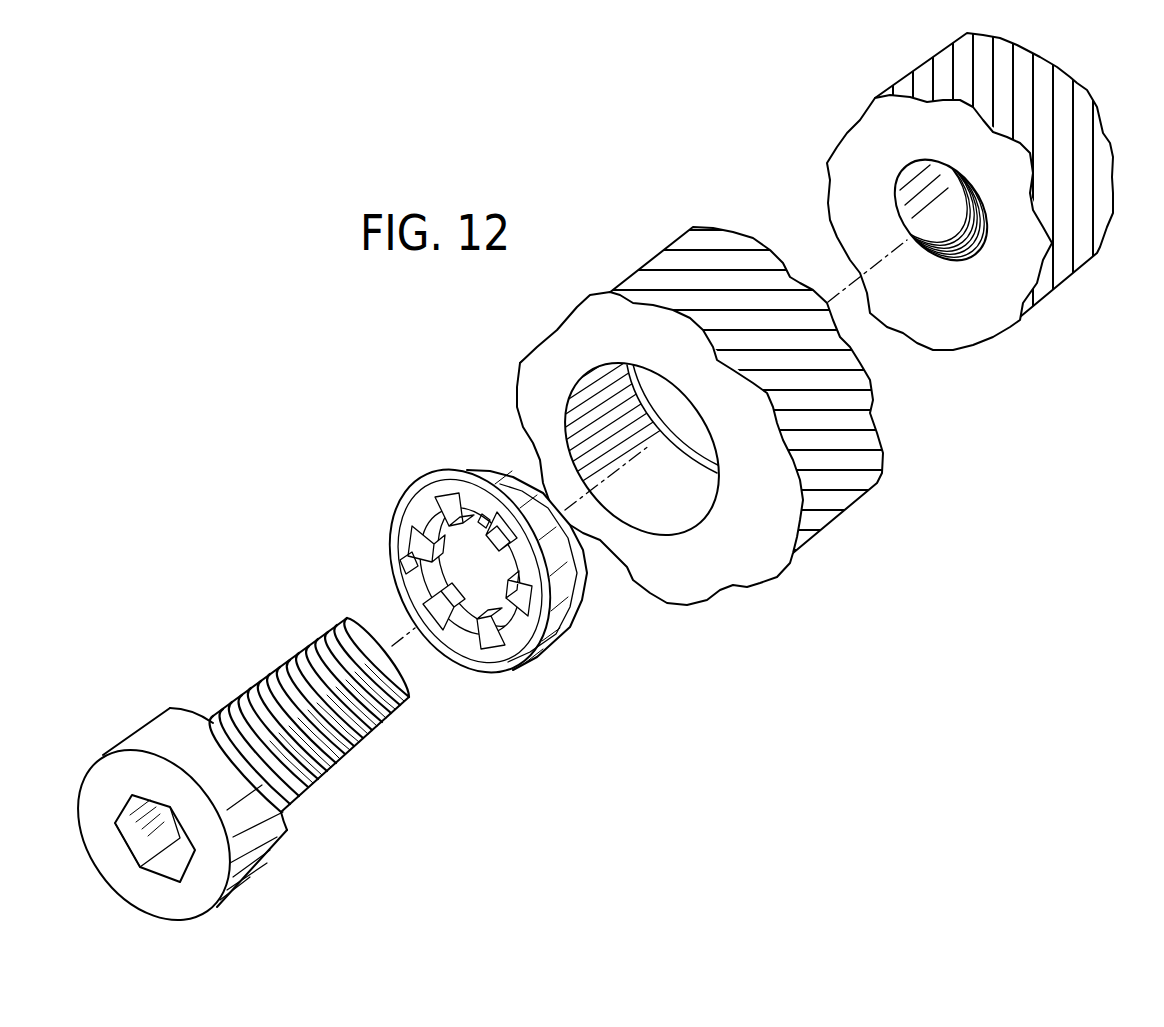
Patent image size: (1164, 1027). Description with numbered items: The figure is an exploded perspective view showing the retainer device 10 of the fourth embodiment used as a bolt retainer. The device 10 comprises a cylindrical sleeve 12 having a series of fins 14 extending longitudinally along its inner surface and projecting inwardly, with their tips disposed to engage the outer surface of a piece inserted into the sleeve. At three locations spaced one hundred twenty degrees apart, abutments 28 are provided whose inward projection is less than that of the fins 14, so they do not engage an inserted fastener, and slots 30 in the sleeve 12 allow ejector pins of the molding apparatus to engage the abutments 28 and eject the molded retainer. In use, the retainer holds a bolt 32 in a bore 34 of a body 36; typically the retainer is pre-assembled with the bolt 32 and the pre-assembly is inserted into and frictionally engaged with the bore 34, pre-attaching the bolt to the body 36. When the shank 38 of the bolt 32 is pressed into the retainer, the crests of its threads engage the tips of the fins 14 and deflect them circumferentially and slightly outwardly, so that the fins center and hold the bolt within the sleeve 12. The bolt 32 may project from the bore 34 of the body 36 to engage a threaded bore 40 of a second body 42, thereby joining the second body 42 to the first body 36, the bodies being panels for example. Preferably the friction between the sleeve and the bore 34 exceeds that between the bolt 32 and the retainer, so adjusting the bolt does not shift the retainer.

The device 10 is at (467, 572).
The cylindrical sleeve 12 is at (432, 478).
The fins 14 is at (412, 532).
The abutments 28 is at (483, 526).
The slots 30 is at (398, 583).
The bolt 32 is at (234, 783).
The bore 34 is at (680, 520).
The body 36 is at (700, 442).
The shank 38 is at (370, 745).
The threaded bore 40 is at (955, 255).
The second body 42 is at (982, 185).